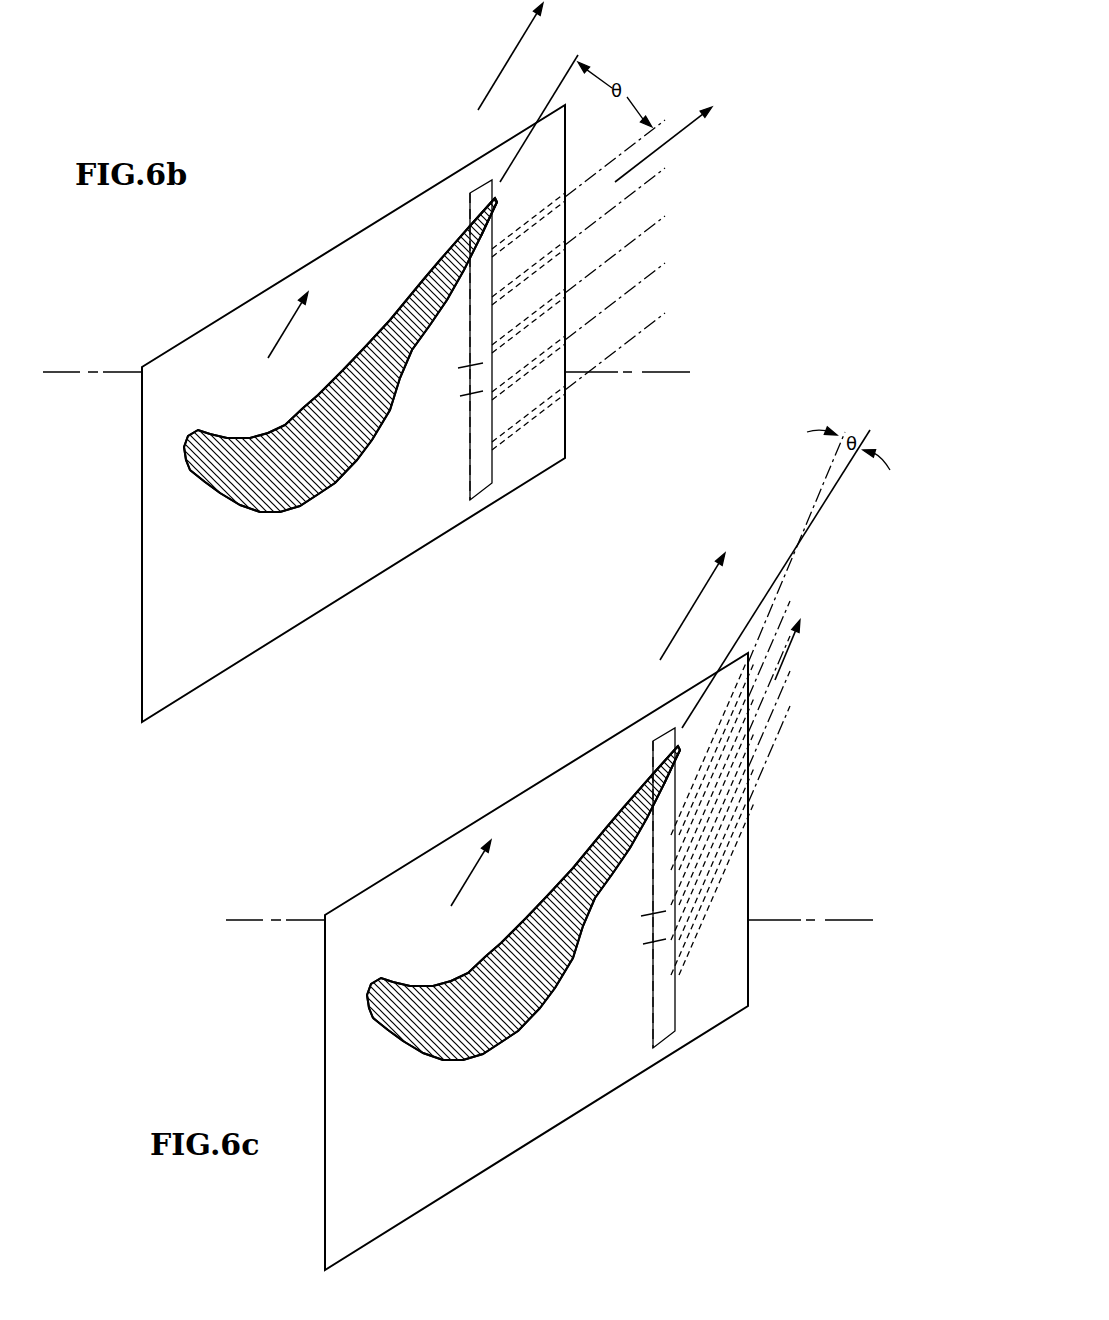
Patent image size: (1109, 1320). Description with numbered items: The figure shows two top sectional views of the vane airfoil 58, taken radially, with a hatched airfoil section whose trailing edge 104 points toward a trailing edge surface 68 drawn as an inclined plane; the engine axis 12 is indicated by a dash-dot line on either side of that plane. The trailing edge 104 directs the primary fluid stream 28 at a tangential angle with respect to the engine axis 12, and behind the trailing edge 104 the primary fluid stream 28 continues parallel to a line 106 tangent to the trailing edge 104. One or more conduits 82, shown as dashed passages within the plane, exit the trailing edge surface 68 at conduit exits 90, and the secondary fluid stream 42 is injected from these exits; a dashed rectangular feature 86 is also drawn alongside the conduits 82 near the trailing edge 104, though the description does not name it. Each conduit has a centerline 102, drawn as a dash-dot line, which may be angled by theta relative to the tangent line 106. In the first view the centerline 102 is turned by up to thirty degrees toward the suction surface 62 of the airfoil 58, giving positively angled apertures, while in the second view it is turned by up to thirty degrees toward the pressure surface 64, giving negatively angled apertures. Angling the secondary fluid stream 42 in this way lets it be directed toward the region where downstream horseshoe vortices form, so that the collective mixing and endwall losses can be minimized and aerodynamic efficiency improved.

In FIG. 6b, the engine axis 12 is at (643, 372).
In FIG. 6c, the engine axis 12 is at (826, 920).
In FIG. 6b, the primary fluid stream 28 is at (507, 65).
In FIG. 6c, the primary fluid stream 28 is at (687, 613).
In FIG. 6b, the secondary fluid stream 42 is at (683, 140).
In FIG. 6c, the secondary fluid stream 42 is at (783, 667).
In FIG. 6b, the airfoil 58 is at (310, 467).
In FIG. 6c, the airfoil 58 is at (493, 1015).
In FIG. 6b, the suction surface 62 is at (362, 460).
In FIG. 6c, the suction surface 62 is at (545, 1008).
In FIG. 6b, the pressure surface 64 is at (318, 396).
In FIG. 6c, the pressure surface 64 is at (501, 944).
In FIG. 6b, the trailing edge surface 68 is at (567, 440).
In FIG. 6c, the trailing edge surface 68 is at (750, 988).
In FIG. 6b, the conduits 82 is at (507, 432).
In FIG. 6c, the conduits 82 is at (690, 980).
In FIG. 6b, the slot 86 is at (453, 374).
In FIG. 6c, the slot 86 is at (636, 922).
In FIG. 6b, the conduit exits 90 is at (566, 388).
In FIG. 6c, the conduit exits 90 is at (748, 810).
In FIG. 6b, the centerline 102 is at (638, 287).
In FIG. 6c, the centerline 102 is at (767, 770).
In FIG. 6b, the trailing edge 104 is at (453, 240).
In FIG. 6c, the trailing edge 104 is at (636, 788).
In FIG. 6b, the tangent line 106 is at (558, 88).
In FIG. 6c, the tangent line 106 is at (738, 637).